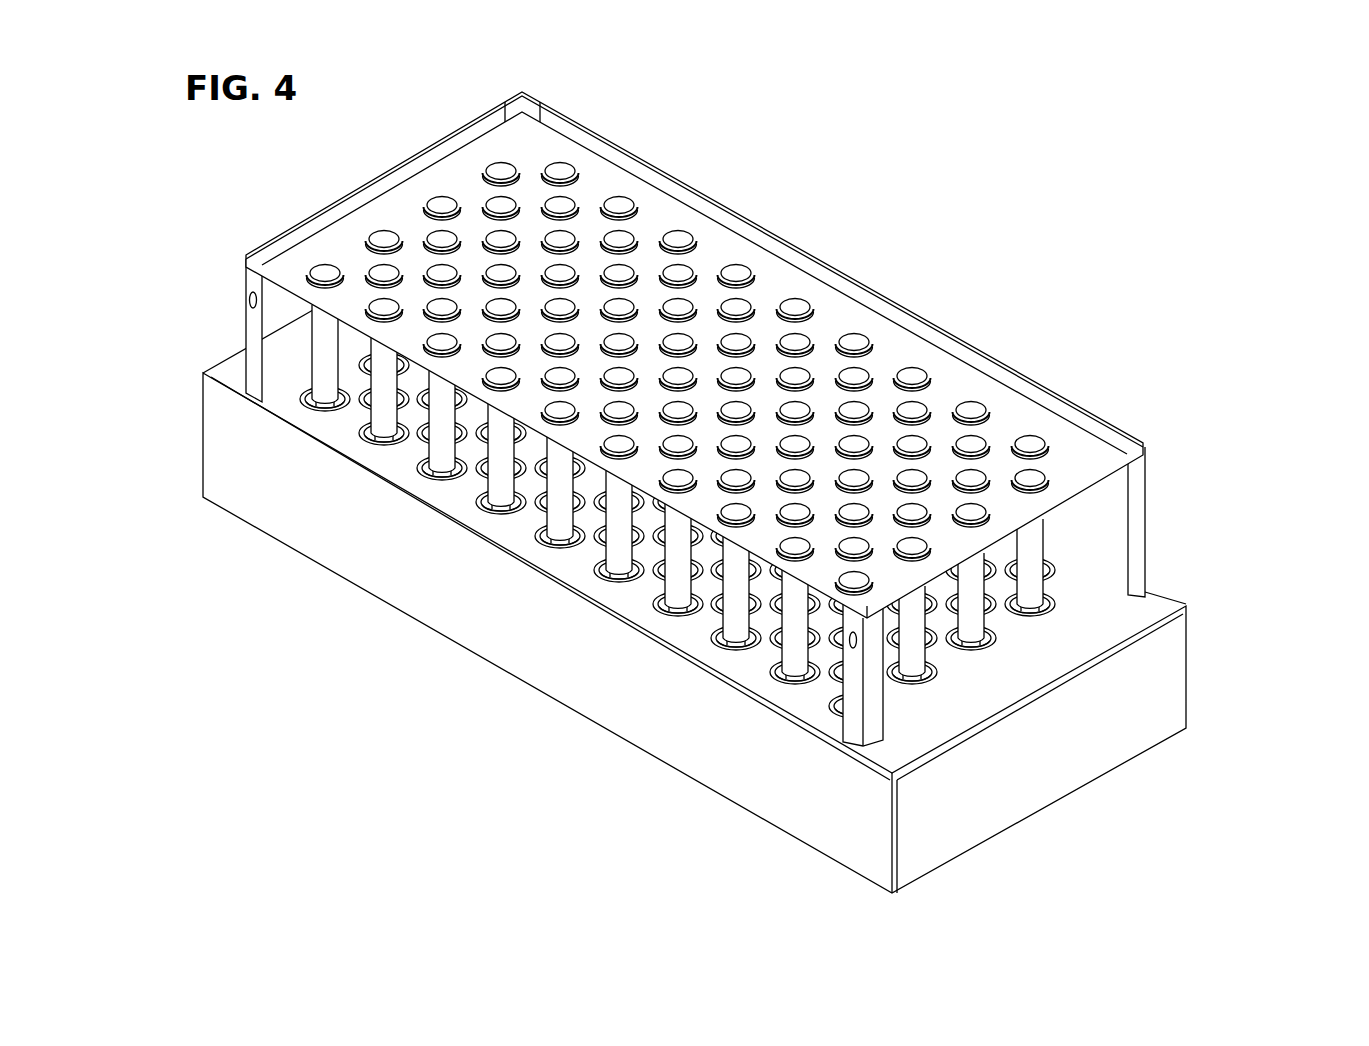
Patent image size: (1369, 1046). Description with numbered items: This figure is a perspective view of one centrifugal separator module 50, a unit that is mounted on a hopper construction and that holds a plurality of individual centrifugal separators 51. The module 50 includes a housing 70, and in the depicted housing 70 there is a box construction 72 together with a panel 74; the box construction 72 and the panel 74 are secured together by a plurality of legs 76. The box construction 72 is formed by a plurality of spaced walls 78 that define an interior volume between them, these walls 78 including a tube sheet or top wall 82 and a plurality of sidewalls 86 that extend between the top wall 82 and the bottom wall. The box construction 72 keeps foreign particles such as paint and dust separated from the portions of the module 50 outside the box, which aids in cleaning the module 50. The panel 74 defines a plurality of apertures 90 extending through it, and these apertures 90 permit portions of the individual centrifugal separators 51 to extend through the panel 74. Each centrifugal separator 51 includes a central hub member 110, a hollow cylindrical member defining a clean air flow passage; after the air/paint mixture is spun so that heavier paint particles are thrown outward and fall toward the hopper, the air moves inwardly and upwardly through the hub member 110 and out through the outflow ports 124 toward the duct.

The centrifugal separator module 50 is at (694, 336).
The housing 70 is at (741, 481).
The box construction 72 is at (700, 584).
The panel 74 is at (1044, 410).
The legs 76 is at (241, 333).
The spaced walls 78 is at (1172, 598).
The top wall 82 is at (707, 535).
The sidewalls 86 is at (686, 760).
The apertures 90 is at (626, 205).
The central hub member 110 is at (371, 410).
The outflow ports 124 is at (928, 334).
The centrifugal separator 51 is at (490, 481).